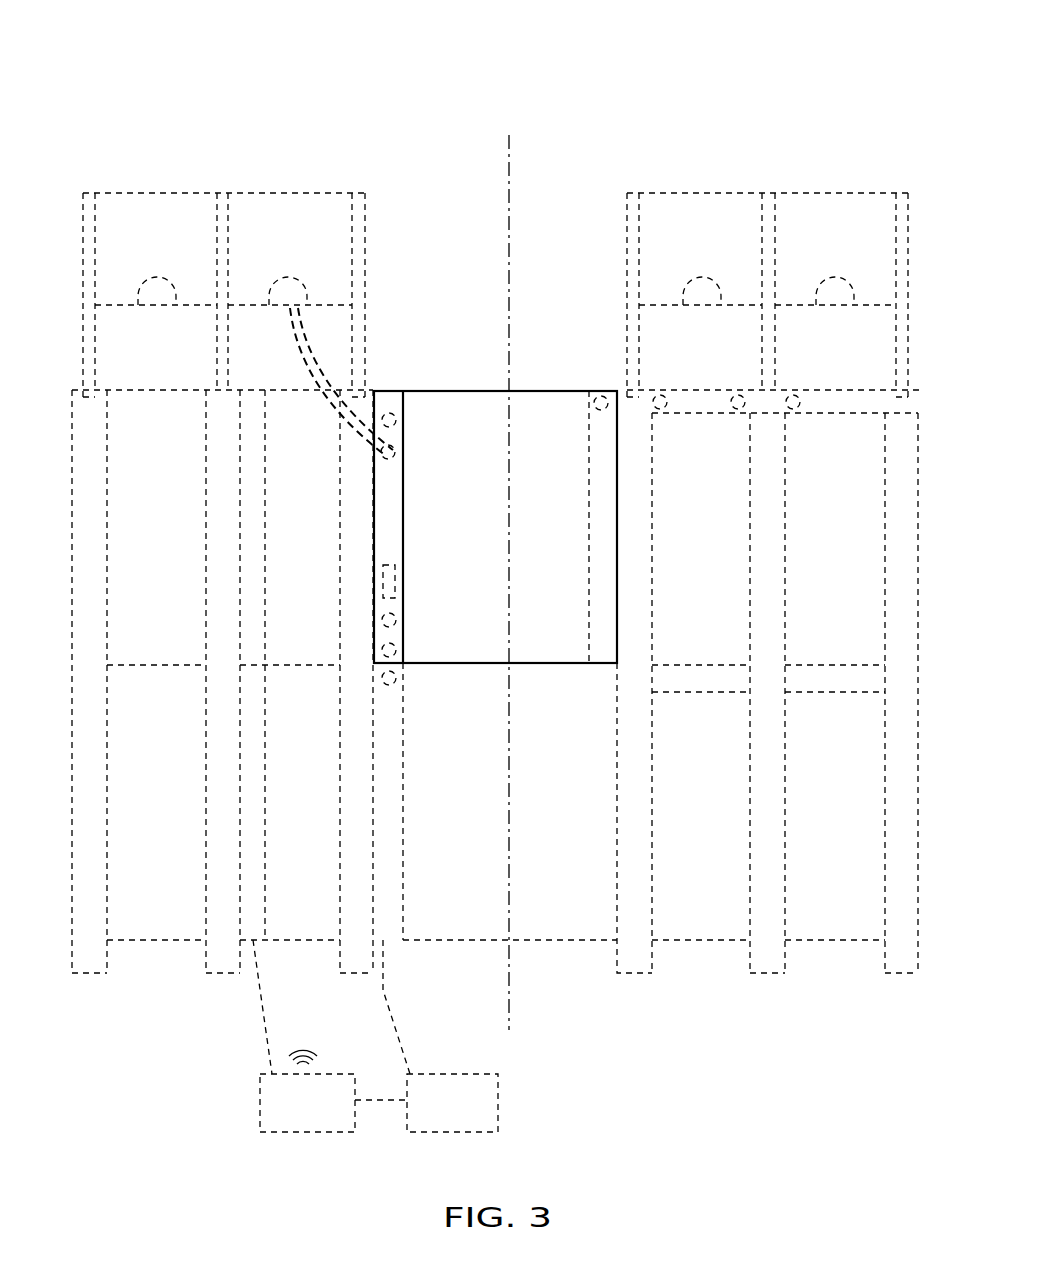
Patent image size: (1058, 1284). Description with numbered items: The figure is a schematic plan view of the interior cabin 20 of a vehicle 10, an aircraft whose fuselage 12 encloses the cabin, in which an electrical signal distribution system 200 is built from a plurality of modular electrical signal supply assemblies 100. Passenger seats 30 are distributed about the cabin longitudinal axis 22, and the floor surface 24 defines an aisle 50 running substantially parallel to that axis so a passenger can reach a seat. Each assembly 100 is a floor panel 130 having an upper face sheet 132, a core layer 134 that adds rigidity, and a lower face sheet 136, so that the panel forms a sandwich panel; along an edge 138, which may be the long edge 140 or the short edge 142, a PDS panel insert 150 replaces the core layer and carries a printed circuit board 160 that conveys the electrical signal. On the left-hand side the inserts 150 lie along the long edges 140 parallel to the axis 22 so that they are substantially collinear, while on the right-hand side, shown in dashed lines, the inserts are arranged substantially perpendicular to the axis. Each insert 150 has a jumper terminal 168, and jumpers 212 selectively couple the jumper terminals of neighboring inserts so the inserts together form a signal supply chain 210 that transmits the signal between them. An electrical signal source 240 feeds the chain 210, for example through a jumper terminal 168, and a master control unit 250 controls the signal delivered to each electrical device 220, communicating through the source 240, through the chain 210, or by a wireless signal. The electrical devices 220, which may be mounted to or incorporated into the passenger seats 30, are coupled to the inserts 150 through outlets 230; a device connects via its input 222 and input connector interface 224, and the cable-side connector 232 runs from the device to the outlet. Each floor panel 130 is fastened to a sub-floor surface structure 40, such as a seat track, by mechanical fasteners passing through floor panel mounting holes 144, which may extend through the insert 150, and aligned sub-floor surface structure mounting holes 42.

The vehicle 10 is at (318, 36).
The fuselage 12 is at (325, 78).
The interior cabin 20 is at (345, 128).
The cabin longitudinal axis 22 is at (513, 180).
The floor surface 24 is at (558, 912).
The passenger seat 30 is at (183, 193).
The sub-floor surface structure 40 is at (107, 975).
The sub-floor surface structure mounting hole 42 is at (78, 390).
The aisle 50 is at (475, 206).
The modular electrical signal supply assembly 100 is at (478, 350).
The floor panel 130 is at (455, 390).
The upper face sheet 132 is at (455, 665).
The core layer 134 is at (475, 665).
The lower face sheet 136 is at (490, 666).
The edge 138 is at (617, 633).
The long edge 140 is at (617, 548).
The short edge 142 is at (562, 665).
The floor panel mounting hole 144 is at (396, 395).
The PDS panel insert 150 is at (405, 498).
The printed circuit board 160 is at (405, 533).
The jumper terminal 168 is at (405, 658).
The electrical signal distribution system 200 is at (470, 312).
The signal supply chain 210 is at (890, 413).
The jumper 212 is at (382, 676).
The electrical device 220 is at (157, 278).
The input 222 is at (154, 312).
The input connector interface 224 is at (160, 312).
The outlet 230 is at (333, 428).
The cable connector 232 is at (285, 312).
The electrical signal source 240 is at (460, 1134).
The master control unit 250 is at (325, 1134).